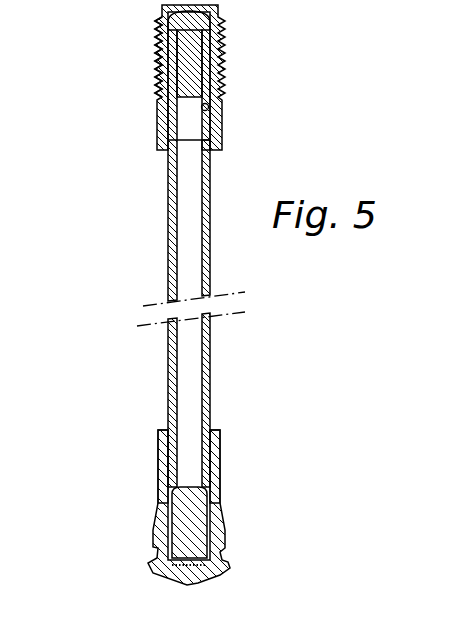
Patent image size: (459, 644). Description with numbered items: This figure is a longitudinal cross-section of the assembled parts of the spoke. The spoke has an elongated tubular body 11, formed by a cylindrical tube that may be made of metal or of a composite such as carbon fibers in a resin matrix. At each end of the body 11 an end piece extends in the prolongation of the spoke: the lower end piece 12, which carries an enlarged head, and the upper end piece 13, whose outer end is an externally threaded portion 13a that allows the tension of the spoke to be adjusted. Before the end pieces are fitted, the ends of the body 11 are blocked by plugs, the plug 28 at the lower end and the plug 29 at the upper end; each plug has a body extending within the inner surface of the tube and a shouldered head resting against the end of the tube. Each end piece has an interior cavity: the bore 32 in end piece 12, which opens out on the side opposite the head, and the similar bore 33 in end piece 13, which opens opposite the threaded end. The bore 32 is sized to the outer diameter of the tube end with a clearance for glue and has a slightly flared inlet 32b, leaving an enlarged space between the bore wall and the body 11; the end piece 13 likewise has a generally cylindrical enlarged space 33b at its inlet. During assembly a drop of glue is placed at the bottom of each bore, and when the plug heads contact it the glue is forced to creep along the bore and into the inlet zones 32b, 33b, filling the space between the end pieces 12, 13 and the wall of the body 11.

The body 11 is at (165, 265).
The end piece 12 is at (157, 510).
The end piece 13 is at (157, 118).
The externally threaded portion 13a is at (157, 66).
The plug 28 is at (187, 538).
The plug 29 is at (187, 78).
The interior cavity 32 is at (160, 428).
The flared inlet 32b is at (218, 430).
The interior cavity 33 is at (213, 108).
The enlarged space 33b is at (212, 153).